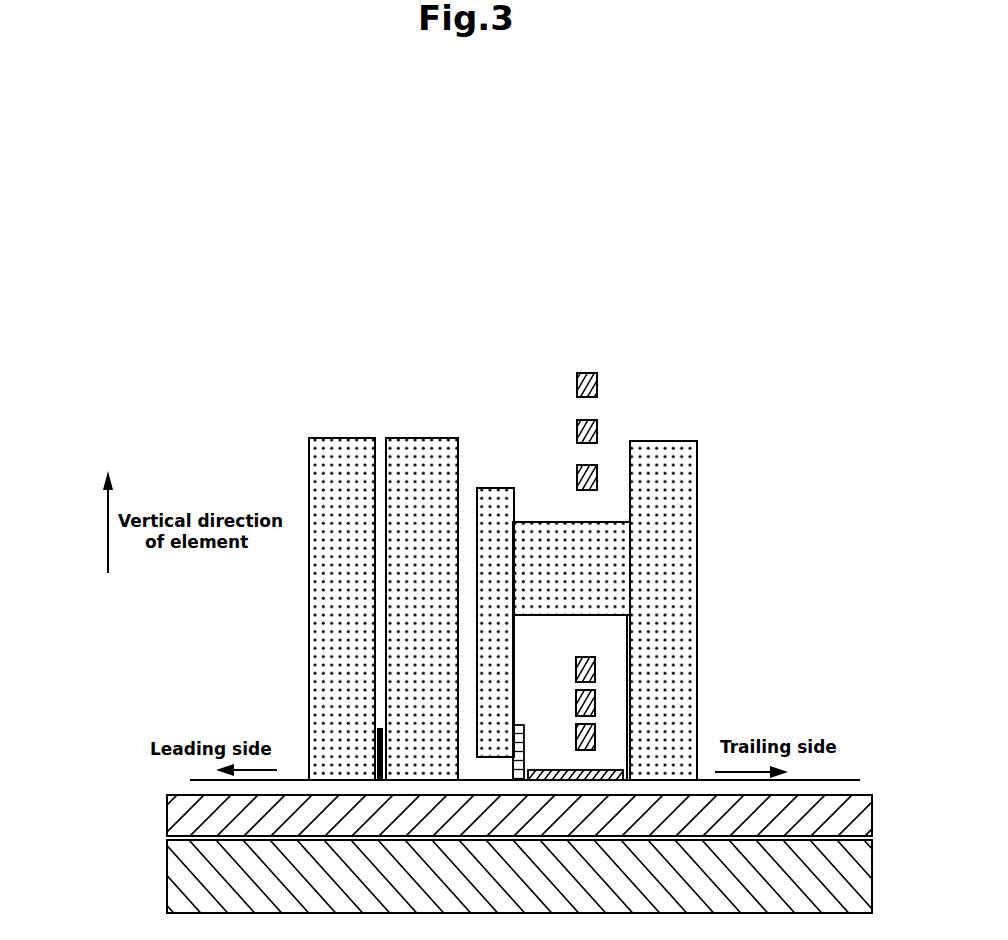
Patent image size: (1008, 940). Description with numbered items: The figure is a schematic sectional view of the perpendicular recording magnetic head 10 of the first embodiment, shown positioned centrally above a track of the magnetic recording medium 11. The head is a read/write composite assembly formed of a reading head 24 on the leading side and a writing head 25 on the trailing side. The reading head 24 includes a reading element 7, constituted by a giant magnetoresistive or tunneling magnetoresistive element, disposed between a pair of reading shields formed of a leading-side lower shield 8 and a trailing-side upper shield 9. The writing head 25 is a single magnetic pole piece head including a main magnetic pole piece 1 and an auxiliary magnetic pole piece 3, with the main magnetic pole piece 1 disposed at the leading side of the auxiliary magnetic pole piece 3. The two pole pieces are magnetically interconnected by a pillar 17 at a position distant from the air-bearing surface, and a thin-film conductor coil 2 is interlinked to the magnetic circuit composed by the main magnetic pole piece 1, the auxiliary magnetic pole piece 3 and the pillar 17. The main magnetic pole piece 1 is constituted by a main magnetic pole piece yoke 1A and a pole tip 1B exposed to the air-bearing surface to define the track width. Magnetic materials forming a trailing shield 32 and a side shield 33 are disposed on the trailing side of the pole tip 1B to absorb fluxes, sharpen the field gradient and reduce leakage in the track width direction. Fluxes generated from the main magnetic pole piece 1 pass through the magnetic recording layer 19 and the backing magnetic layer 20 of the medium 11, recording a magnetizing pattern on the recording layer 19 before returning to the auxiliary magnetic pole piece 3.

The perpendicular recording magnetic head 10 is at (526, 212).
The reading head 24 is at (462, 313).
The writing head 25 is at (703, 313).
The lower shield 8 is at (328, 448).
The upper shield 9 is at (412, 448).
The reading element 7 is at (377, 752).
The main magnetic pole piece 1 is at (548, 428).
The main magnetic pole piece yoke 1A is at (490, 496).
The pole tip 1B is at (518, 717).
The pillar 17 is at (577, 533).
The thin-film conductor coil 2 is at (590, 657).
The auxiliary magnetic pole piece 3 is at (673, 533).
The trailing shield 32 is at (623, 774).
The side shield 33 is at (575, 775).
The magnetic recording medium 11 is at (82, 793).
The magnetic recording layer 19 is at (166, 815).
The backing magnetic layer 20 is at (166, 872).